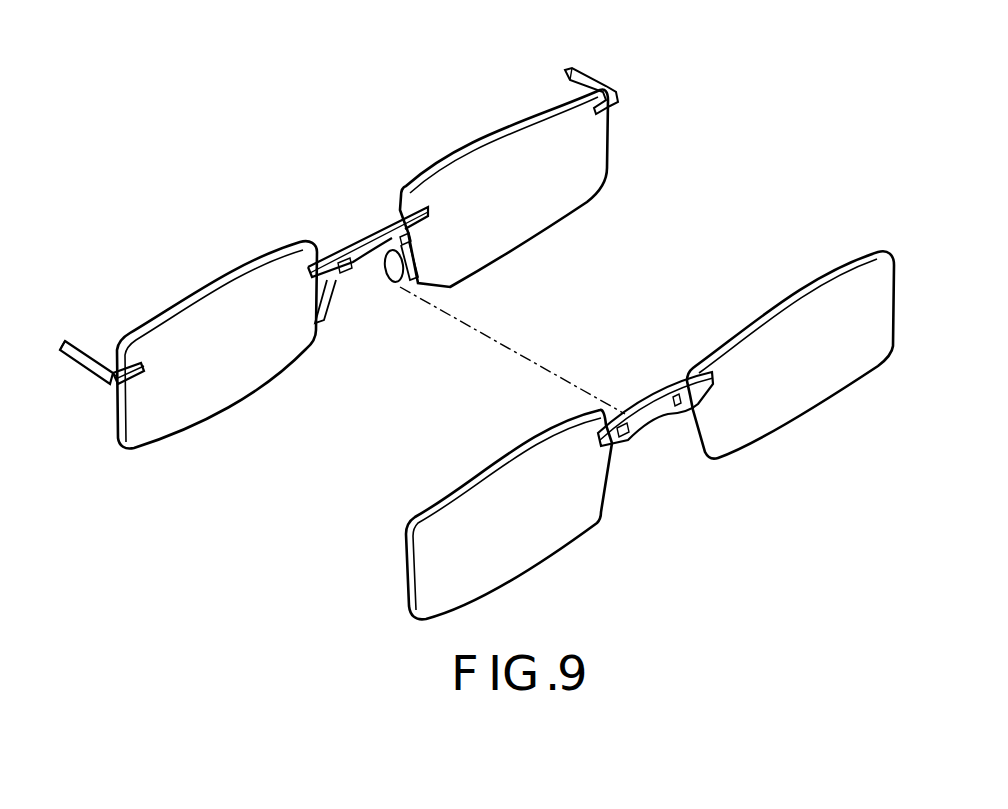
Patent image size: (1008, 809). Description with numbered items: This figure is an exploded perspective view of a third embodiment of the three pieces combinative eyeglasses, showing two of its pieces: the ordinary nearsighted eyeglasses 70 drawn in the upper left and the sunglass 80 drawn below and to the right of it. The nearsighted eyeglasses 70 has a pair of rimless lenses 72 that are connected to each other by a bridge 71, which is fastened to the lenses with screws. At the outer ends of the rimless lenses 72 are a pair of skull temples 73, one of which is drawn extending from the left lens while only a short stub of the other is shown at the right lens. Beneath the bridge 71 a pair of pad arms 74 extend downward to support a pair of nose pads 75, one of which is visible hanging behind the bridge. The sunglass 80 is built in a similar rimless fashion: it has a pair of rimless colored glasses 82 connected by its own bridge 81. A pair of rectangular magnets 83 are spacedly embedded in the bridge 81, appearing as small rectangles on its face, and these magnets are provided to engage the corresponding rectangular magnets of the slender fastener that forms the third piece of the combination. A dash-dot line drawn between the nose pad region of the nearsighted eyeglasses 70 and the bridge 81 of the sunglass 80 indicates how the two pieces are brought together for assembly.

The ordinary nearsighted eyeglasses 70 is at (641, 88).
The bridge 71 is at (360, 235).
The rimless lenses 72 is at (543, 205).
The skull temples 73 is at (597, 82).
The pad arms 74 is at (338, 293).
The nose pads 75 is at (372, 267).
The sunglass 80 is at (836, 250).
The bridge 81 is at (653, 395).
The rimless colored glasses 82 is at (770, 420).
The rectangular magnets 83 is at (624, 434).